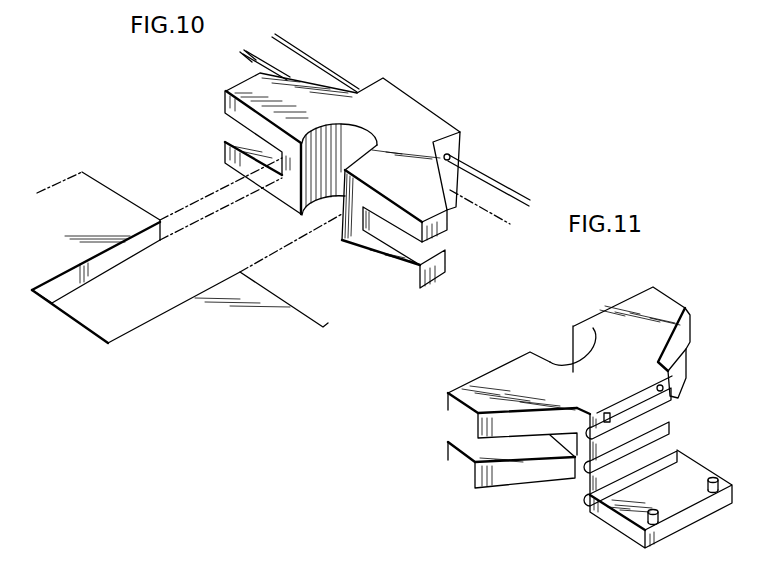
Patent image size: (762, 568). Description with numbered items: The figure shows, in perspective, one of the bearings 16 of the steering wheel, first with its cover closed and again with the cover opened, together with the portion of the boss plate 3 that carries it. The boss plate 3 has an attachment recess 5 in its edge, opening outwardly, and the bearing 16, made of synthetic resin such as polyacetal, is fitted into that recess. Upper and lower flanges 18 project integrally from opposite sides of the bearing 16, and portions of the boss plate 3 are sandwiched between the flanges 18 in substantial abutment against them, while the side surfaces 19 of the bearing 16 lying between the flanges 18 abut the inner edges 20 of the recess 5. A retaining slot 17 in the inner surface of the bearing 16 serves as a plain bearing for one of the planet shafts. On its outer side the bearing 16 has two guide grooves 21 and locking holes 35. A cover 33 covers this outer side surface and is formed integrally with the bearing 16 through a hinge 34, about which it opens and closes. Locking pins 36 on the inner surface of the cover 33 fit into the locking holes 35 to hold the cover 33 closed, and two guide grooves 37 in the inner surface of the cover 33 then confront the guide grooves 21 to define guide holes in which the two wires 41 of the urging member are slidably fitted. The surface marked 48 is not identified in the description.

In FIG. 10, the boss plate 3 is at (107, 202).
In FIG. 10, the attachment recesses 5 is at (77, 314).
In FIG. 10, the bearing 16 is at (323, 87).
In FIG. 11, the bearing 16 is at (591, 325).
In FIG. 10, the retaining slot 17 is at (326, 140).
In FIG. 11, the retaining slot 17 is at (588, 346).
In FIG. 10, the upper and lower flanges 18 is at (232, 104).
In FIG. 11, the upper and lower flanges 18 is at (458, 418).
In FIG. 10, the side surfaces 19 is at (352, 242).
In FIG. 11, the side surfaces 19 is at (563, 440).
In FIG. 10, the inner edges 20 is at (167, 310).
In FIG. 11, the guide grooves 21 is at (670, 419).
In FIG. 10, the cover 33 is at (431, 117).
In FIG. 11, the cover 33 is at (697, 473).
In FIG. 11, the hinge 34 is at (672, 449).
In FIG. 11, the locking holes 35 is at (612, 404).
In FIG. 11, the locking pins 36 is at (712, 494).
In FIG. 11, the guide grooves 37 is at (612, 506).
In FIG. 10, the wires 41 is at (478, 197).
In FIG. 10, the flat surface 48 is at (370, 125).
In FIG. 11, the flat surface 48 is at (555, 380).